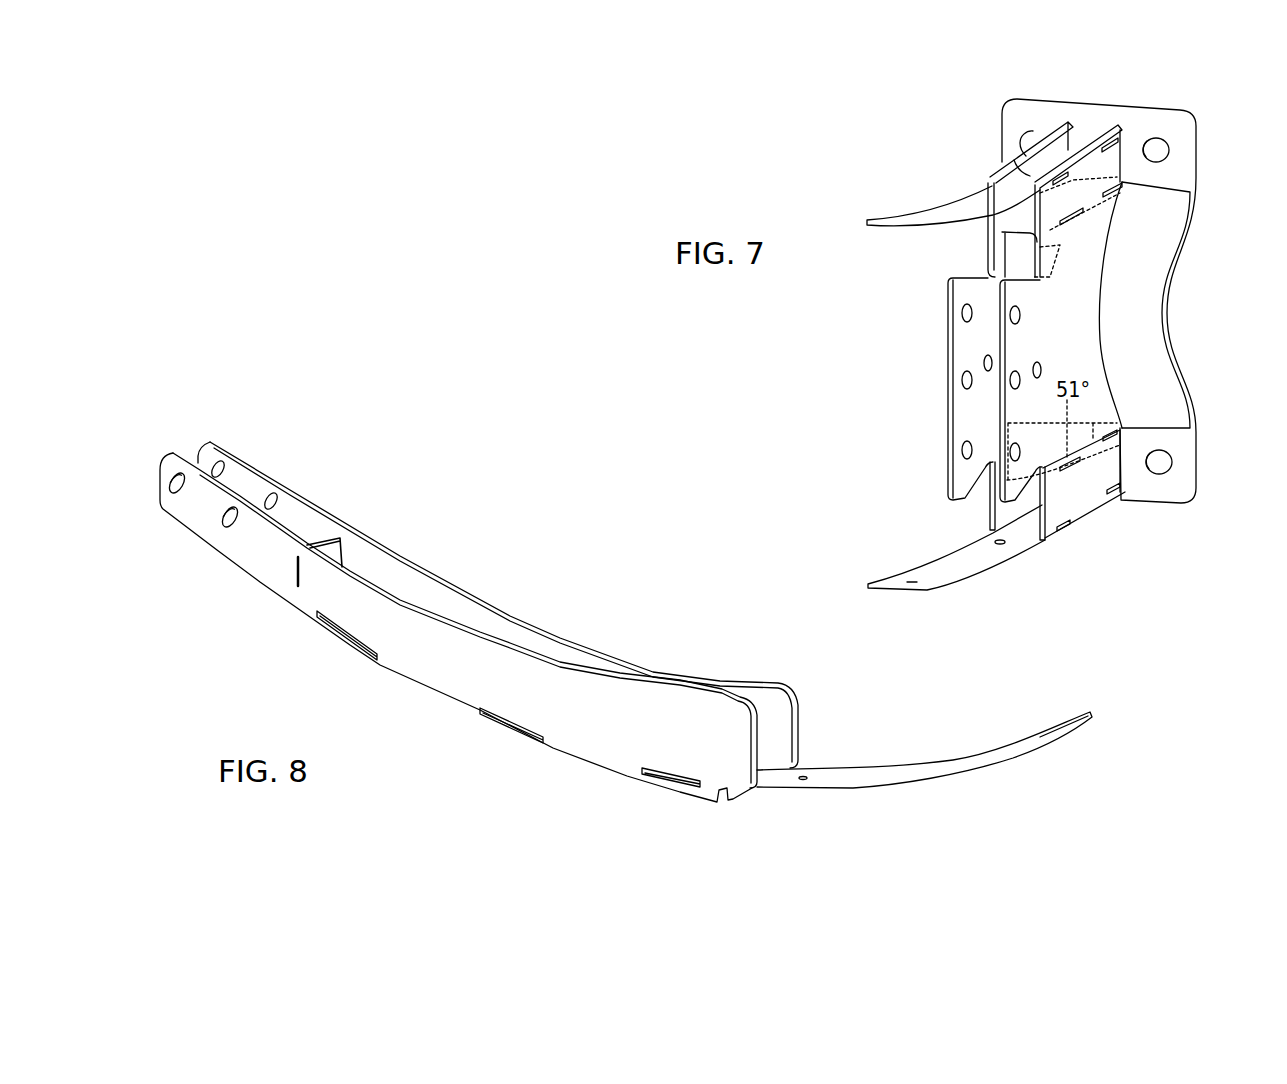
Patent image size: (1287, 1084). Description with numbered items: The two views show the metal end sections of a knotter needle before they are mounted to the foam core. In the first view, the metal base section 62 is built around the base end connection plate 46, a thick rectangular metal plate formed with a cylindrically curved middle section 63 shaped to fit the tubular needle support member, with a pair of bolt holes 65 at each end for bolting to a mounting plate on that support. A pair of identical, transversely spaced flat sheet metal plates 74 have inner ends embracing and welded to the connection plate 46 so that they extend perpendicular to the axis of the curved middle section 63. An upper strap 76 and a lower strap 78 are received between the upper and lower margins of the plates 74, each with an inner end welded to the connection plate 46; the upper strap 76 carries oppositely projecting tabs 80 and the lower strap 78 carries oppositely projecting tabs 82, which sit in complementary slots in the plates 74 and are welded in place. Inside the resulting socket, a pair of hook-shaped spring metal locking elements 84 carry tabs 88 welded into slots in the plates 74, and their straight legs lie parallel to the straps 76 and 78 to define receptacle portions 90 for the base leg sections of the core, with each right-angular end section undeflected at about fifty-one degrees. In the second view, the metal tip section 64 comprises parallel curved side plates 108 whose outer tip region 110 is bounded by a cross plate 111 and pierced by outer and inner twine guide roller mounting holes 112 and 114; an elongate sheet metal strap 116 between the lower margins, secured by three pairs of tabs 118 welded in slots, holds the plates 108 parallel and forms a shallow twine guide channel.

In FIG. 7, the base end connection plate 46 is at (1078, 92).
In FIG. 7, the metal base section 62 is at (912, 384).
In FIG. 7, the cylindrically curved middle section 63 is at (1170, 303).
In FIG. 8, the metal tip section 64 is at (473, 494).
In FIG. 7, the bolt holes 65 is at (1020, 132).
In FIG. 7, the flat sheet metal plates 74 is at (948, 343).
In FIG. 7, the upper strap 76 is at (905, 214).
In FIG. 7, the lower strap 78 is at (947, 588).
In FIG. 7, the oppositely projecting tabs 80 is at (1066, 172).
In FIG. 7, the oppositely projecting tabs 82 is at (1065, 532).
In FIG. 7, the spring metal locking elements 84 is at (1017, 250).
In FIG. 7, the oppositely projecting tabs 88 is at (1083, 215).
In FIG. 7, the receptacle portions 90 is at (996, 247).
In FIG. 8, the side plates 108 is at (528, 626).
In FIG. 8, the outer tip region 110 is at (350, 510).
In FIG. 8, the cross plate 111 is at (337, 554).
In FIG. 8, the outer twine guide roller mounting holes 112 is at (160, 500).
In FIG. 8, the inner twine guide roller mounting holes 114 is at (232, 530).
In FIG. 8, the elongate sheet metal strap 116 is at (933, 760).
In FIG. 8, the oppositely projecting tabs 118 is at (353, 650).